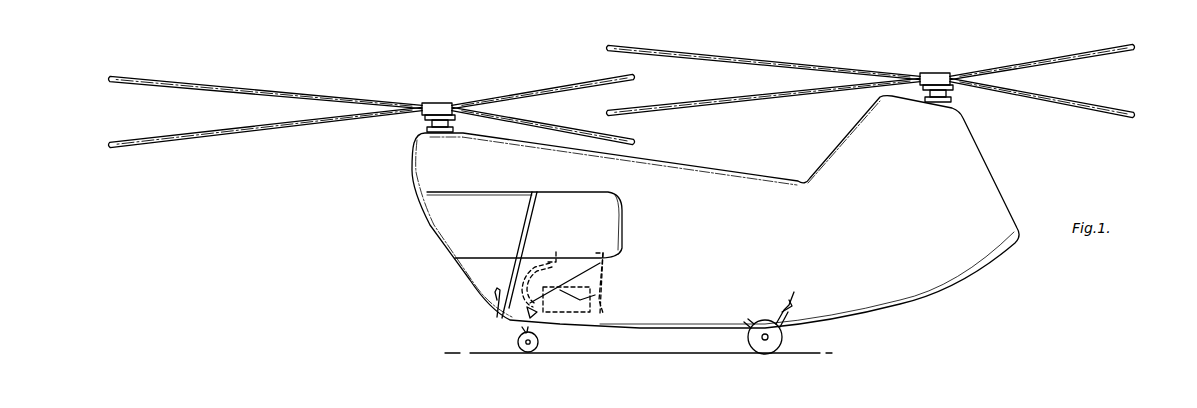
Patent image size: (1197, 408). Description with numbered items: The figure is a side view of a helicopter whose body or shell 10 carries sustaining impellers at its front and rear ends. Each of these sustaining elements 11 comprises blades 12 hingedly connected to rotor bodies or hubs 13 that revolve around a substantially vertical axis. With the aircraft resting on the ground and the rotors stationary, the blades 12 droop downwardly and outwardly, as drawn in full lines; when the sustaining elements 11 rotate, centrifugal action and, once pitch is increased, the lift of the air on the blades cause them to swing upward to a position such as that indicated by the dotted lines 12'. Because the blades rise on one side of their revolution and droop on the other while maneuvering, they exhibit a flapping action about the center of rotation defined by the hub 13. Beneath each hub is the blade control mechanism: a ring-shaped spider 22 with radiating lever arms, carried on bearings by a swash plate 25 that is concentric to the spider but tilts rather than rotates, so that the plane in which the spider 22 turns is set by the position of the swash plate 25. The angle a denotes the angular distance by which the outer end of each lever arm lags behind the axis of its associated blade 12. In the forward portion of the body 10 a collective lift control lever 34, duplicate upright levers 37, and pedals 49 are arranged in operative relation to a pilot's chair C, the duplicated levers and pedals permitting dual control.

The body or shell 10 is at (715, 225).
The sustaining elements 11 is at (453, 97).
The blades 12 is at (793, 94).
The raised blade position 12' is at (514, 90).
The rotor bodies or hubs 13 is at (433, 103).
The spider 22 is at (422, 118).
The swash plate 25 is at (430, 129).
The angle a is at (1077, 62).
The pedals 49 is at (495, 292).
The upright levers 37 is at (555, 252).
The collective lift control lever 34 is at (563, 292).
The pilot's chair C is at (607, 262).